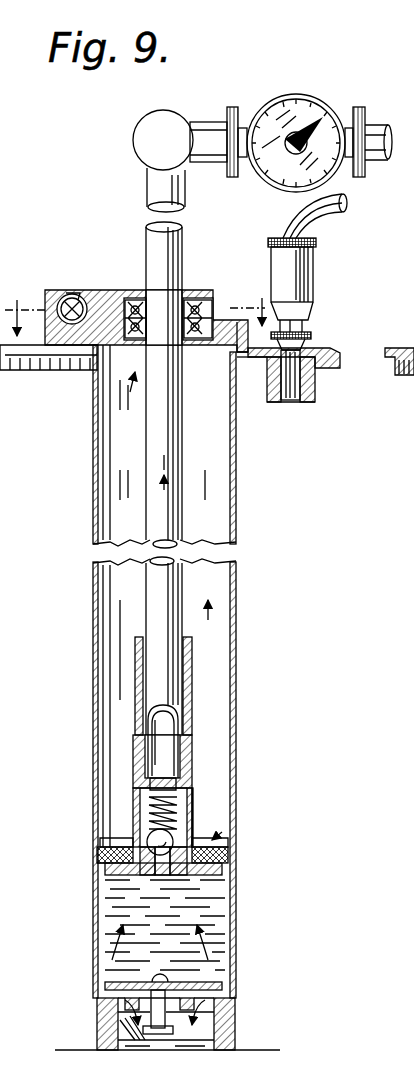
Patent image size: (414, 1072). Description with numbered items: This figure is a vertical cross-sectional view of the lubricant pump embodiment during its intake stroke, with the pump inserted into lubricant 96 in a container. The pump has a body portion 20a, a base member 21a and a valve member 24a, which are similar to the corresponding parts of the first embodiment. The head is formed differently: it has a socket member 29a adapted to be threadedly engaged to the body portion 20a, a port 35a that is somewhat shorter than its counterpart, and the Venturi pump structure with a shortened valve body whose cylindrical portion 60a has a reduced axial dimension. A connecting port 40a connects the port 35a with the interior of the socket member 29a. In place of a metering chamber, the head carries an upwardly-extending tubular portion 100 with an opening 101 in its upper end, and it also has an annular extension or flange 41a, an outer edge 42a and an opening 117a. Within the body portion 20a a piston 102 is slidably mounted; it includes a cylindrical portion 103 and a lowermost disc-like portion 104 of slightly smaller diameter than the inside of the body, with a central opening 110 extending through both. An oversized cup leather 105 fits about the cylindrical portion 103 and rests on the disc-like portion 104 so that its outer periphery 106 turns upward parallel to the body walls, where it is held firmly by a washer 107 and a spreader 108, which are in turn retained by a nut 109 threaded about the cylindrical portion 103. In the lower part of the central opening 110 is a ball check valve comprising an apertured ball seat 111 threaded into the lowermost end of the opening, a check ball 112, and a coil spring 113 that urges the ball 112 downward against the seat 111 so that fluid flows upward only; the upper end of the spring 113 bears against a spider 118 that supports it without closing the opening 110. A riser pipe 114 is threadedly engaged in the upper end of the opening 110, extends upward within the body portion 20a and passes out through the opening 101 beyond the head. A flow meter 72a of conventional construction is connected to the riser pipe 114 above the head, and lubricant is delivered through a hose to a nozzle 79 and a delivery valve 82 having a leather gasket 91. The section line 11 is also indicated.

The flow meter 72a is at (320, 96).
The nozzle 79 is at (330, 205).
The delivery valve 82 is at (306, 278).
The gasket 91 is at (312, 336).
The opening 117a is at (300, 378).
The outer edge 42a is at (379, 339).
The annular extension or flange 41a is at (396, 372).
The socket member 29a is at (244, 362).
The connecting port 40a is at (95, 325).
The cylindrical portion 60a is at (62, 296).
The port 35a is at (80, 290).
The opening 101 is at (157, 296).
The tubular portion 100 is at (213, 318).
The section line 11 is at (136, 309).
The body portion 20a is at (281, 631).
The riser pipe 114 is at (178, 248).
The cylindrical portion 103 is at (193, 748).
The spider 118 is at (185, 778).
The coil spring 113 is at (185, 796).
The piston 102 is at (190, 820).
The central opening 110 is at (180, 815).
The outer periphery 106 is at (214, 840).
The cup leather 105 is at (228, 862).
The nut 109 is at (135, 845).
The washer 107 is at (108, 847).
The spreader 108 is at (100, 860).
The disc-like portion 104 is at (200, 870).
The check ball 112 is at (185, 868).
The apertured ball seat 111 is at (170, 870).
The lubricant 96 is at (118, 928).
The valve member 24a is at (225, 985).
The base member 21a is at (235, 1016).